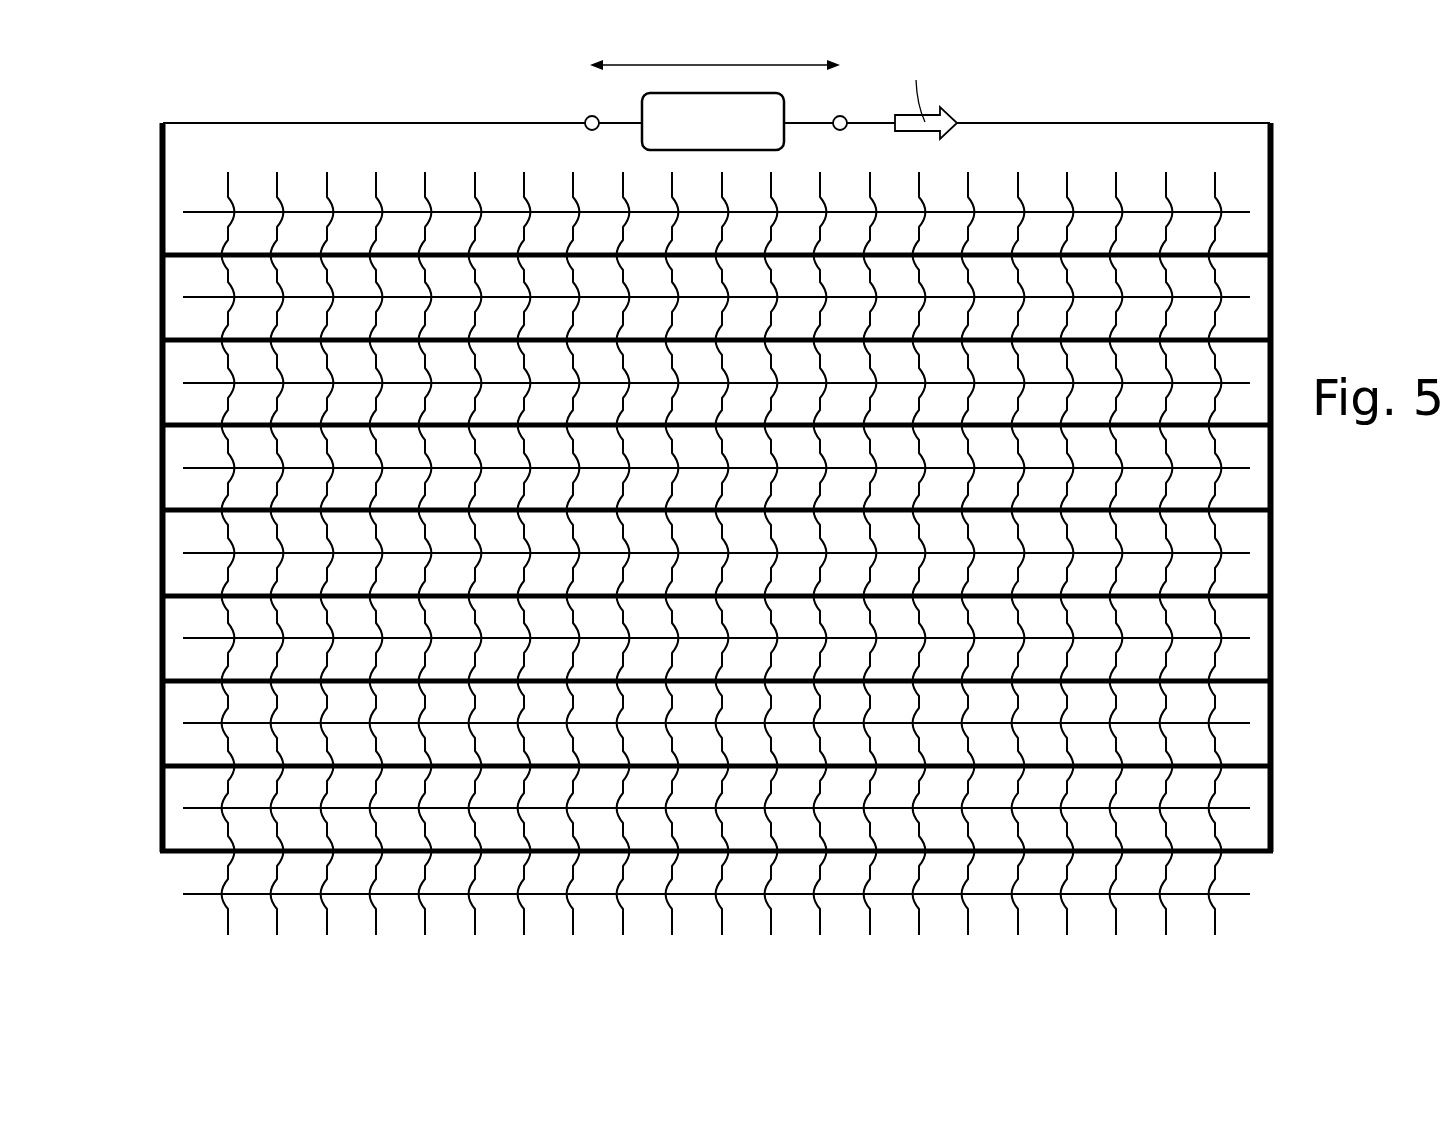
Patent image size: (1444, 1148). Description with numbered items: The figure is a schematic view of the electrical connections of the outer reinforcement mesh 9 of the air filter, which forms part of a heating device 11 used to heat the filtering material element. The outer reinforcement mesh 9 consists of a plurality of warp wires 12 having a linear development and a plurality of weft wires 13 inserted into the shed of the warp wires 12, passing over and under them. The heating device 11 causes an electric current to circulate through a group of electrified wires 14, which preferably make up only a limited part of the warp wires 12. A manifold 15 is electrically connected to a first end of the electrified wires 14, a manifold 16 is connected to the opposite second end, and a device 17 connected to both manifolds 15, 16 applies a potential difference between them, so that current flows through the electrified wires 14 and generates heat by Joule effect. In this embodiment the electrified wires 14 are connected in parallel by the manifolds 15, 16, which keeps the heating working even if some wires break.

The outer reinforcement mesh 9 is at (1350, 588).
The heating device 11 is at (1325, 82).
The warp wires 12 is at (1237, 895).
The weft wires 13 is at (1115, 174).
The electrified wires 14 is at (1257, 854).
The manifold 15 is at (160, 147).
The manifold 16 is at (1273, 637).
The device 17 is at (771, 96).